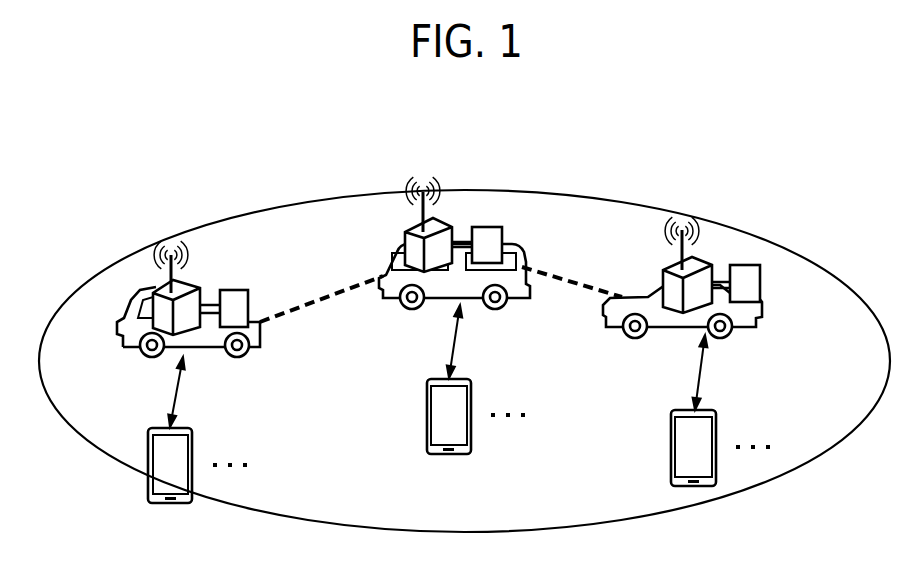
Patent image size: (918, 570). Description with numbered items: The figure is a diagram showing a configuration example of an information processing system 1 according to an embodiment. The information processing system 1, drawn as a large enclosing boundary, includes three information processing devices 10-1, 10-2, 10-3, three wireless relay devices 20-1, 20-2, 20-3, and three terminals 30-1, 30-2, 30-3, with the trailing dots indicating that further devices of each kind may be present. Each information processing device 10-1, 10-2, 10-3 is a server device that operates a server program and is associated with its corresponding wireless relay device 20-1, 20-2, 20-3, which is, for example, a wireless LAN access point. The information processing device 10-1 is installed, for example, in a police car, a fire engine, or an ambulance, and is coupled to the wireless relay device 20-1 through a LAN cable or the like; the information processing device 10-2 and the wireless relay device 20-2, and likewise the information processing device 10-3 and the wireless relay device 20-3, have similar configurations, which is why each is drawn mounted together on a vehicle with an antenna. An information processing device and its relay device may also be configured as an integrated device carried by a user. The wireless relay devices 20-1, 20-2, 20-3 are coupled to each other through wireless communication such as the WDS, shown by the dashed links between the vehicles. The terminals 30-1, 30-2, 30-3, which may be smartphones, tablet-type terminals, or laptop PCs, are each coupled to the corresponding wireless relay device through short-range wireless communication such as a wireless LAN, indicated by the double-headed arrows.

The information processing system 1 is at (807, 191).
The information processing device 10-1 is at (234, 289).
The information processing device 10-2 is at (495, 226).
The information processing device 10-3 is at (761, 283).
The wireless relay device 20-1 is at (191, 284).
The wireless relay device 20-2 is at (446, 220).
The wireless relay device 20-3 is at (707, 262).
The terminal 30-1 is at (194, 441).
The terminal 30-2 is at (472, 394).
The terminal 30-3 is at (717, 426).